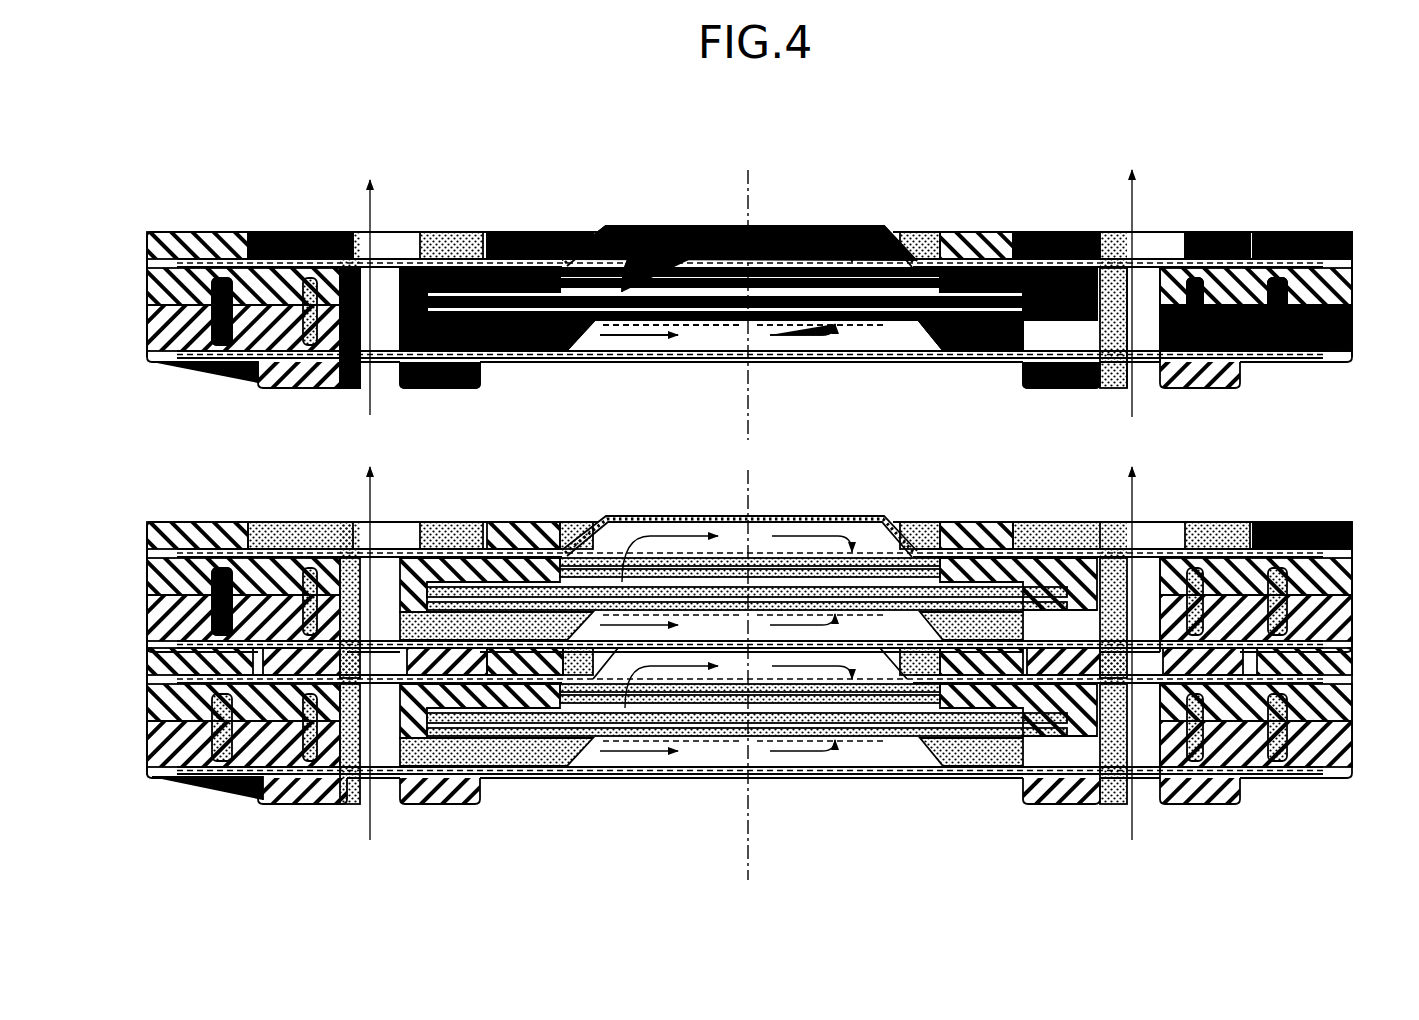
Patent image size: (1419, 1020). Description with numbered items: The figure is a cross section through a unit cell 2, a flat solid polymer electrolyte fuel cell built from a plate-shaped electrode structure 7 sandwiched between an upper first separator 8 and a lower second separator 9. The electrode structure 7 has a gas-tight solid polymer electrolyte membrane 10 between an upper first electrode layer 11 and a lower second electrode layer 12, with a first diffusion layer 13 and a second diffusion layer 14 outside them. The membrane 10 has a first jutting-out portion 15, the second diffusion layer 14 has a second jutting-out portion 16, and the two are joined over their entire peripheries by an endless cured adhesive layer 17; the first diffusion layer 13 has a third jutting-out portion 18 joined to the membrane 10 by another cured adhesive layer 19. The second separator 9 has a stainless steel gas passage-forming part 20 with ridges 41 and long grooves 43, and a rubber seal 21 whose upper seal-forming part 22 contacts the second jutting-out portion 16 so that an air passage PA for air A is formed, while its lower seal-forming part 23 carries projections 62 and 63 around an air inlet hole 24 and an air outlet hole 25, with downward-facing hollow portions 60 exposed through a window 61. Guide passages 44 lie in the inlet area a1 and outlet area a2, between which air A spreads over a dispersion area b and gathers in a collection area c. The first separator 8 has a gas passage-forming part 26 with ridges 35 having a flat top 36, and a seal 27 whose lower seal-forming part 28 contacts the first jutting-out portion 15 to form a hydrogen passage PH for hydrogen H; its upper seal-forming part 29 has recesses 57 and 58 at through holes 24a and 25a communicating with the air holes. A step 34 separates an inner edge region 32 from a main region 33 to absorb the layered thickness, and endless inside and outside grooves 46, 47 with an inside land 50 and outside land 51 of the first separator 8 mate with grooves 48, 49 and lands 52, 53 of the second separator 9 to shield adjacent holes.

The unit cell 2 is at (937, 192).
The electrode structure 7 is at (858, 258).
The first separator 8 is at (215, 230).
The second separator 9 is at (212, 368).
The solid polymer electrolyte membrane 10 is at (598, 285).
The first electrode layer 11 is at (680, 244).
The second electrode layer 12 is at (790, 332).
The first diffusion layer 13 is at (666, 298).
The second diffusion layer 14 is at (838, 334).
The first jutting-out portion 15 is at (1068, 310).
The second jutting-out portion 16 is at (963, 326).
The cured adhesive layer 17 is at (1090, 300).
The third jutting-out portion 18 is at (637, 268).
The cured adhesive layer 19 is at (627, 310).
The gas passage-forming part 20 is at (522, 262).
The seal 21 is at (490, 366).
The upper seal-forming part 22 is at (413, 328).
The lower seal-forming part 23 is at (433, 390).
The air inlet hole 24 is at (350, 370).
The through hole 24a is at (373, 506).
The air outlet hole 25 is at (1148, 392).
The through hole 25a is at (1162, 493).
The gas passage-forming part 26 is at (585, 262).
The seal 27 is at (512, 229).
The lower seal-forming part 28 is at (1347, 540).
The upper seal-forming part 29 is at (505, 240).
The inner edge region 32 is at (972, 262).
The main region 33 is at (1225, 366).
The step 34 is at (1068, 329).
The ridges 35 is at (716, 225).
The flat top 36 is at (836, 225).
The ridges 41 is at (608, 349).
The long groove 43 is at (655, 349).
The guide passages 44 is at (510, 342).
The endless inside groove 46 is at (1195, 245).
The endless outside groove 47 is at (1277, 285).
The endless inside groove 48 is at (1195, 350).
The endless outside groove 49 is at (1298, 366).
The inside land 50 is at (1277, 352).
The outside land 51 is at (1345, 268).
The inside land 52 is at (1215, 262).
The outside land 53 is at (1346, 366).
The recess 57 is at (290, 232).
The recess 58 is at (1052, 238).
The long groove-shaped hollow portions 60 is at (706, 330).
The window 61 is at (900, 334).
The projections 62 is at (252, 364).
The projections 63 is at (1040, 391).
The air A is at (376, 380).
The hydrogen H is at (786, 243).
The air passage PA is at (570, 338).
The hydrogen passage PH is at (918, 276).
The inlet area a1 is at (449, 278).
The outlet area a2 is at (1028, 275).
The dispersion area b is at (612, 275).
The collection area c is at (938, 288).